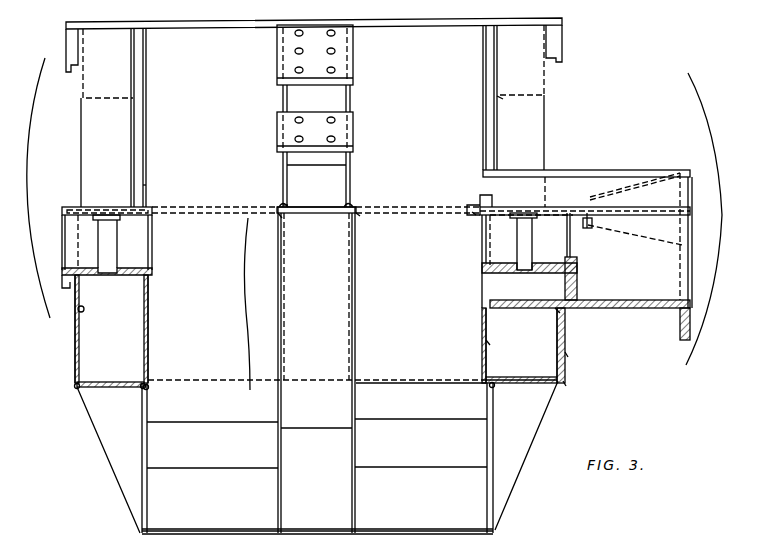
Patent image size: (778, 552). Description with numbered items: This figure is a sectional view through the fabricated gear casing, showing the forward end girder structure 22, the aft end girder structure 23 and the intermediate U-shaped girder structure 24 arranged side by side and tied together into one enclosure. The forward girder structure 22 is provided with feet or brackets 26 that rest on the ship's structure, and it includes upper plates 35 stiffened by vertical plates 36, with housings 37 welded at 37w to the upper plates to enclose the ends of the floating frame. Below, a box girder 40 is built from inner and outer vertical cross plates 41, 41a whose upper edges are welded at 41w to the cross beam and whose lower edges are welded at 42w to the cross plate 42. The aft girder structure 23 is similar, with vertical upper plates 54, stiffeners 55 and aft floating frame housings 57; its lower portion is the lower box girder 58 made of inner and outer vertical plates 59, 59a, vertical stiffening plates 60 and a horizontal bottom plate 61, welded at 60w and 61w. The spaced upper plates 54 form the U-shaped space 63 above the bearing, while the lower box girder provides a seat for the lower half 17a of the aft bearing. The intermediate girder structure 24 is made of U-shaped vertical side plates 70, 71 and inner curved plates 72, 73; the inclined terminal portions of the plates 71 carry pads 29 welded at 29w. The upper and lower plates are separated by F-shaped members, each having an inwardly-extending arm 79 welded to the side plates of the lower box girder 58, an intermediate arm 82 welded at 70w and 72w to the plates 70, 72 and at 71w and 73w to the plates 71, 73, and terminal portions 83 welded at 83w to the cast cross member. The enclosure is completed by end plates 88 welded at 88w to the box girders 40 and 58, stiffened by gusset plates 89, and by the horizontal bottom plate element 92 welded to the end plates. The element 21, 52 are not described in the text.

The lower half of bearing 17a is at (146, 266).
The frame member 21 is at (623, 290).
The forward end beam or girder structure 22 is at (718, 219).
The aft end beam or girder structure 23 is at (27, 188).
The intermediate U-shaped beam or girder structure 24 is at (237, 304).
The feet or brackets 26 is at (552, 207).
The pads 29 is at (342, 128).
The weld 29w is at (353, 43).
The upper plates 35 is at (484, 134).
The vertical plates 36 is at (535, 143).
The housings 37 is at (535, 72).
The weld 37w is at (503, 99).
The box girder 40 is at (533, 342).
The inner vertical cross plate 41 is at (488, 361).
The outer vertical cross plate 41a is at (557, 354).
The weld 41w is at (556, 310).
The cross plate 42 is at (520, 379).
The weld 42w is at (566, 384).
The post 52 is at (498, 126).
The vertical upper plates 54 is at (148, 141).
The stiffeners 55 is at (93, 145).
The aft floating frame housings 57 is at (95, 78).
The lower box girder 58 is at (117, 344).
The inner vertical plate 59 is at (148, 351).
The outer vertical plate 59a is at (75, 345).
The vertical stiffening plates 60 is at (120, 295).
The weld 60w is at (79, 312).
The horizontal bottom plate 61 is at (115, 376).
The weld 61w is at (75, 387).
The U-shaped space 63 is at (147, 184).
The U-shaped vertical side plate 70 is at (348, 488).
The weld 70w is at (357, 216).
The U-shaped vertical side plate 71 is at (283, 177).
The weld 71w is at (280, 207).
The inner curved plate 72 is at (338, 281).
The weld 72w is at (298, 223).
The inner curved plate 73 is at (327, 166).
The weld 73w is at (298, 207).
The inwardly-extending arm 79 is at (97, 212).
The intermediate arm 82 is at (304, 207).
The terminal portions 83 is at (463, 206).
The weld 83w is at (472, 214).
The end plates 88 is at (148, 490).
The weld 88w is at (141, 390).
The gusset plates 89 is at (113, 446).
The horizontal bottom plate element 92 is at (408, 534).